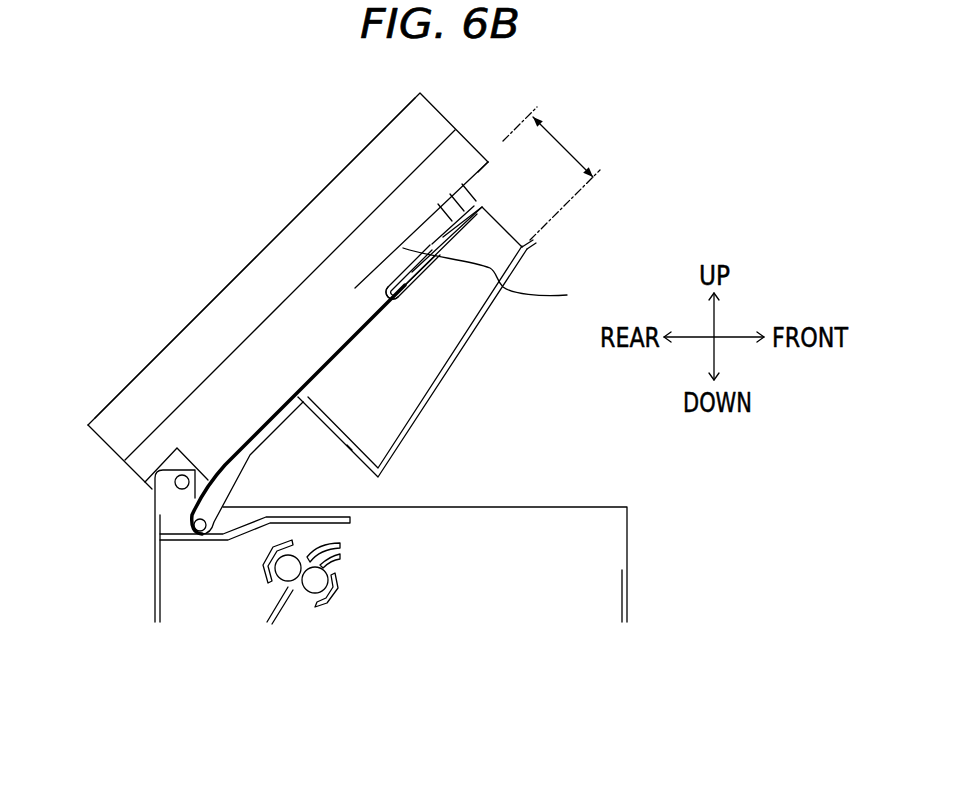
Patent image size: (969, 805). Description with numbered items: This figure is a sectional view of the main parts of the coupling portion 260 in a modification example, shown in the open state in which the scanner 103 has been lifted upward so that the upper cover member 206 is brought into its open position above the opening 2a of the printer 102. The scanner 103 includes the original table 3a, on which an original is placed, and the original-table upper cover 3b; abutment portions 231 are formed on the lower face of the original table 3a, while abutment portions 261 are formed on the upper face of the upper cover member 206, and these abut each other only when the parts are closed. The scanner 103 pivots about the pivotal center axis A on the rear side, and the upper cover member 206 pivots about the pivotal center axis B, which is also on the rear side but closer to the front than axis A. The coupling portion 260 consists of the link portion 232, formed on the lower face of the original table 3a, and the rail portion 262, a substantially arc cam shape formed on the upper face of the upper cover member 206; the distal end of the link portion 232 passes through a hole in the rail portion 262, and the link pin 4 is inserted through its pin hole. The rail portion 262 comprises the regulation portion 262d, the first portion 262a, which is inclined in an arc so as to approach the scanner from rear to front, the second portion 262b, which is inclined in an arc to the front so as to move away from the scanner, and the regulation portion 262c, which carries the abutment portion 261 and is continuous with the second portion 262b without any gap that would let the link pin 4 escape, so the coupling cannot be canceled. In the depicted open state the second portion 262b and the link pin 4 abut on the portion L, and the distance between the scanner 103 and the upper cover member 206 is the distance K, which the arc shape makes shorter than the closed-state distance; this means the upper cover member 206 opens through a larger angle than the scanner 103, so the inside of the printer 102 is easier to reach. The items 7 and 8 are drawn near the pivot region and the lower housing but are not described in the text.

The opening 2a is at (540, 503).
The original table 3a is at (263, 365).
The original-table upper cover 3b is at (161, 378).
The link pin 4 is at (370, 242).
The lever member 7 is at (185, 542).
The rollers 8 is at (312, 582).
The printer 102 is at (232, 668).
The scanner 103 is at (288, 291).
The upper cover member 206 is at (407, 440).
The abutment portion 231 is at (481, 190).
The link portion 232 is at (410, 245).
The coupling portion 260 is at (481, 190).
The abutment portion 261 is at (440, 235).
The rail portion 262 is at (415, 370).
The first portion 262a is at (390, 298).
The second portion 262b is at (410, 257).
The regulation portion 262c is at (437, 235).
The regulation portion 262d is at (390, 293).
The pivotal center axis A is at (176, 483).
The pivotal center axis B is at (194, 526).
The distance K is at (563, 145).
The portion L is at (400, 250).